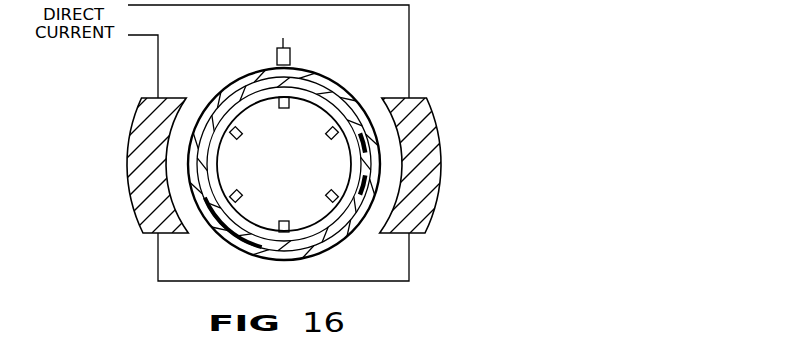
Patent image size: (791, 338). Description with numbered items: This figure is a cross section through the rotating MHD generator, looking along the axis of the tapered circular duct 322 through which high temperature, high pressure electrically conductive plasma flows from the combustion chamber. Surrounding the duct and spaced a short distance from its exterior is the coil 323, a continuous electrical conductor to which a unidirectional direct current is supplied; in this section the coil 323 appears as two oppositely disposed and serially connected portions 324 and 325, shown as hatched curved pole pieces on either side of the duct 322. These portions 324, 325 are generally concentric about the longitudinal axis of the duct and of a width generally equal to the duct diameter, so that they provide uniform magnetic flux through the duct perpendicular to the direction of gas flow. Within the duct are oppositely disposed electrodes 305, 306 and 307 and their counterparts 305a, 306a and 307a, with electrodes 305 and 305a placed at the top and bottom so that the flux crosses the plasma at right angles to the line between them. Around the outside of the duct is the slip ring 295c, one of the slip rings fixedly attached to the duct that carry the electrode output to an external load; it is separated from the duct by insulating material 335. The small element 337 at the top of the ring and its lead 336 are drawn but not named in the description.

The coil 323 is at (178, 6).
The coil portion 324 is at (128, 140).
The coil portion 325 is at (440, 138).
The slip ring 295c is at (340, 93).
The insulating material 335 is at (330, 246).
The tapered circular duct 322 is at (216, 165).
The brush lead 336 is at (283, 38).
The brush 337 is at (290, 57).
The electrode 305 is at (296, 115).
The electrode 305a is at (291, 214).
The electrode 306 is at (240, 136).
The electrode 306a is at (329, 193).
The electrode 307 is at (240, 195).
The electrode 307a is at (329, 136).